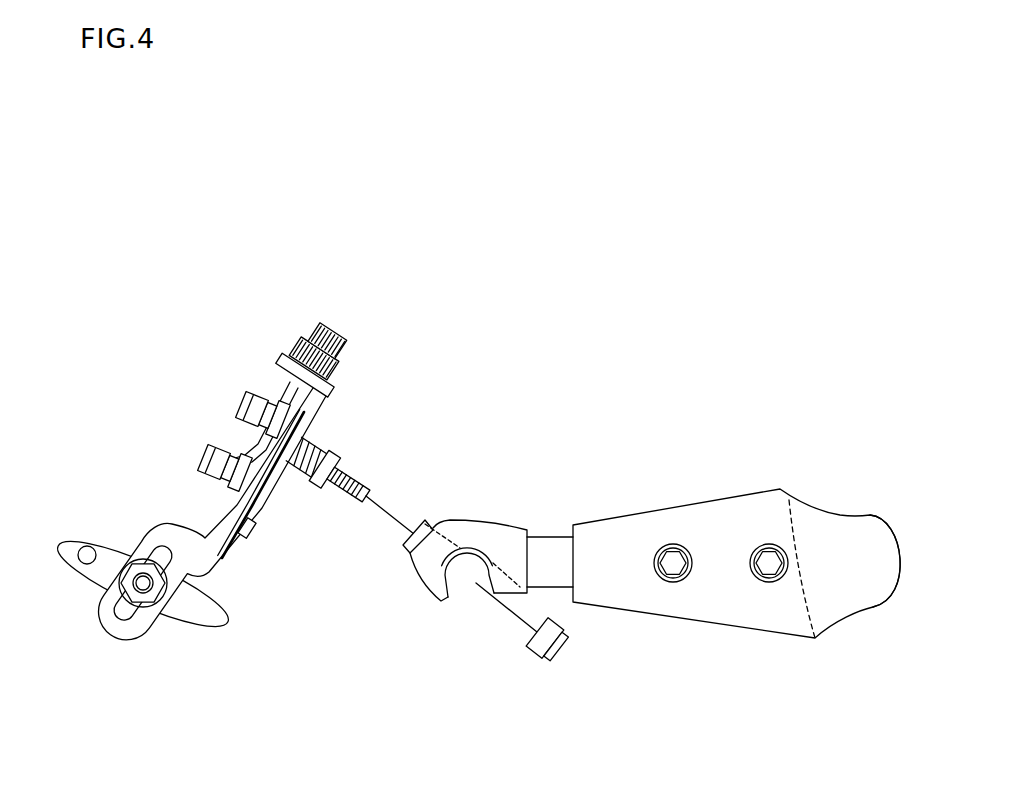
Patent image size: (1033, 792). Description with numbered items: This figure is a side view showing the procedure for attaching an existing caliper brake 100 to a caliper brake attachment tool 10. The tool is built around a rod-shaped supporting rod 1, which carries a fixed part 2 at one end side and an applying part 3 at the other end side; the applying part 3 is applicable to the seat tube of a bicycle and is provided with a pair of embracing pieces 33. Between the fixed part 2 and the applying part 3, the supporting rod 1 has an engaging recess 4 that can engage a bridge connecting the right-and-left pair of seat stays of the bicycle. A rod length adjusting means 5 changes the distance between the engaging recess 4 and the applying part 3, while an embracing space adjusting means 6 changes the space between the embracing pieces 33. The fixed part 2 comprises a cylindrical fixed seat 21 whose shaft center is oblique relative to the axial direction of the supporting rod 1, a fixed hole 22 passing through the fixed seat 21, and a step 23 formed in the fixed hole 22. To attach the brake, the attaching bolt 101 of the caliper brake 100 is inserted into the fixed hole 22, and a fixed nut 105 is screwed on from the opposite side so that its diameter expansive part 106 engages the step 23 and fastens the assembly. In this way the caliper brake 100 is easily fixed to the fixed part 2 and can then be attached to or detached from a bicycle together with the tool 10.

The caliper brake 100 is at (204, 306).
The attaching bolt 101 is at (348, 466).
The caliper brake attachment tool 10 is at (736, 509).
The supporting rod 1 is at (541, 543).
The fixed part 2 is at (441, 547).
The fixed seat 21 is at (400, 547).
The fixed hole 22 is at (418, 575).
The step 23 is at (424, 572).
The applying part 3 is at (790, 498).
The embracing pieces 33 is at (871, 515).
The engaging recess 4 is at (470, 600).
The rod length adjusting means 5 is at (670, 596).
The embracing space adjusting means 6 is at (768, 594).
The fixed nut 105 is at (534, 661).
The diameter expansive part 106 is at (552, 663).